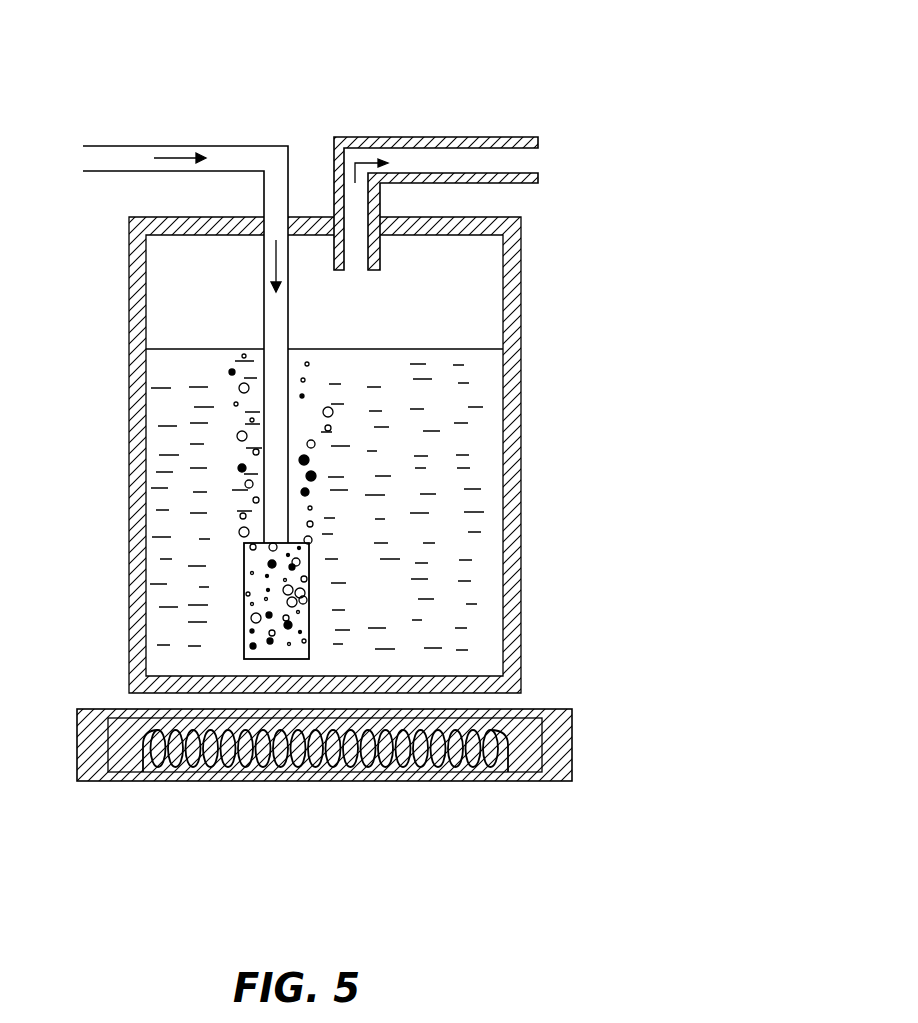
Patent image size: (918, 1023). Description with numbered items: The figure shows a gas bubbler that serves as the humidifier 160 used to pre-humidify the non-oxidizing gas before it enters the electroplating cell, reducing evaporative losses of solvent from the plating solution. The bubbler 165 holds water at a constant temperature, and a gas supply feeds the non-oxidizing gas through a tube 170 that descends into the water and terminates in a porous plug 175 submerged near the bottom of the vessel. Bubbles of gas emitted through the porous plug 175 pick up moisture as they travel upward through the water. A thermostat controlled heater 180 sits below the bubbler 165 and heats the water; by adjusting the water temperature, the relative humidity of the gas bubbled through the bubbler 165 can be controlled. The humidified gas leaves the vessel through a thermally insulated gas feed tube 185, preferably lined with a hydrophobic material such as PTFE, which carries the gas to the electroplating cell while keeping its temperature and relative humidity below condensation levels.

The humidifier 160 is at (334, 66).
The bubbler 165 is at (521, 262).
The inlet conduit 170 is at (264, 270).
The porous plug 175 is at (309, 568).
The thermostat controlled heater 180 is at (517, 712).
The thermally insulated gas feed tube 185 is at (463, 137).